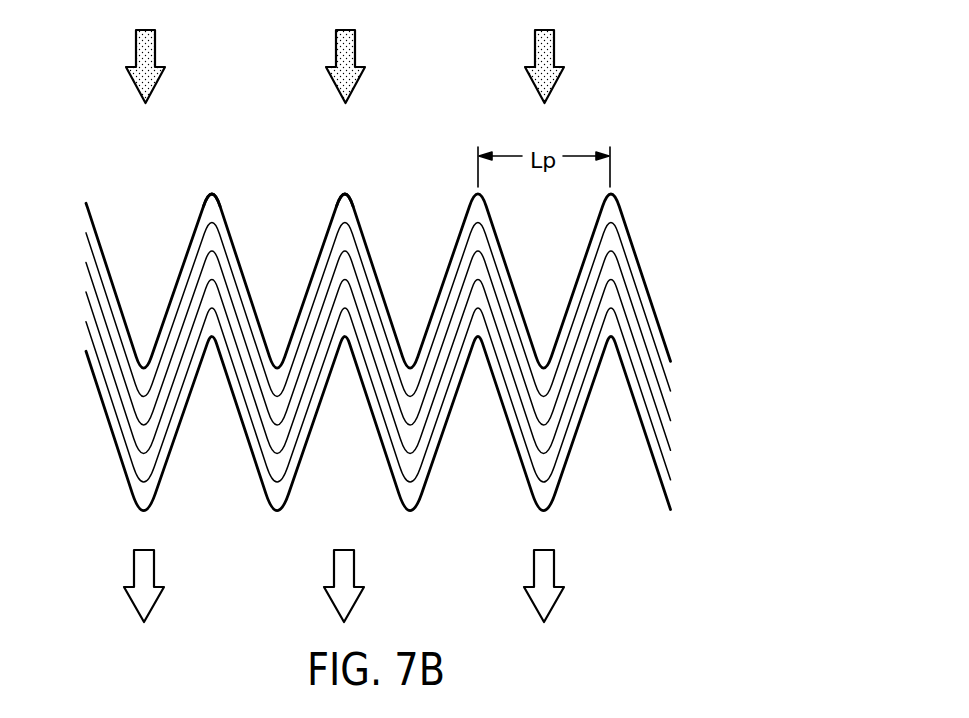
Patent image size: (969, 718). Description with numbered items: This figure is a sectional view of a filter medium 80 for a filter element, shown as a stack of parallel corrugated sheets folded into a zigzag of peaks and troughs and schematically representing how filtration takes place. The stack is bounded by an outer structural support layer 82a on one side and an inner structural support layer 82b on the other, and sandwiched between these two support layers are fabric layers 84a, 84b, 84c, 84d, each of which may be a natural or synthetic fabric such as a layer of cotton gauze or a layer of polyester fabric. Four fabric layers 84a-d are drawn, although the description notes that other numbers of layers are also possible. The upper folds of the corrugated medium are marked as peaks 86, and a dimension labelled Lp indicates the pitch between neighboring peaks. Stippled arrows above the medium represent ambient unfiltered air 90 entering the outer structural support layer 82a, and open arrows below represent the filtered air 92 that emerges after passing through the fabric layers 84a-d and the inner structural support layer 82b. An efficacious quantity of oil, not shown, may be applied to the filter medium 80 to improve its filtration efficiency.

The filter medium 80 is at (423, 280).
The outer structural support layer 82a is at (650, 281).
The inner structural support layer 82b is at (662, 494).
The fabric layer 84a is at (667, 375).
The fabric layer 84b is at (667, 410).
The fabric layer 84c is at (667, 440).
The fabric layer 84d is at (667, 468).
The peak of corrugation 86 is at (213, 192).
The ambient unfiltered air 90 is at (156, 47).
The filtered air 92 is at (156, 566).